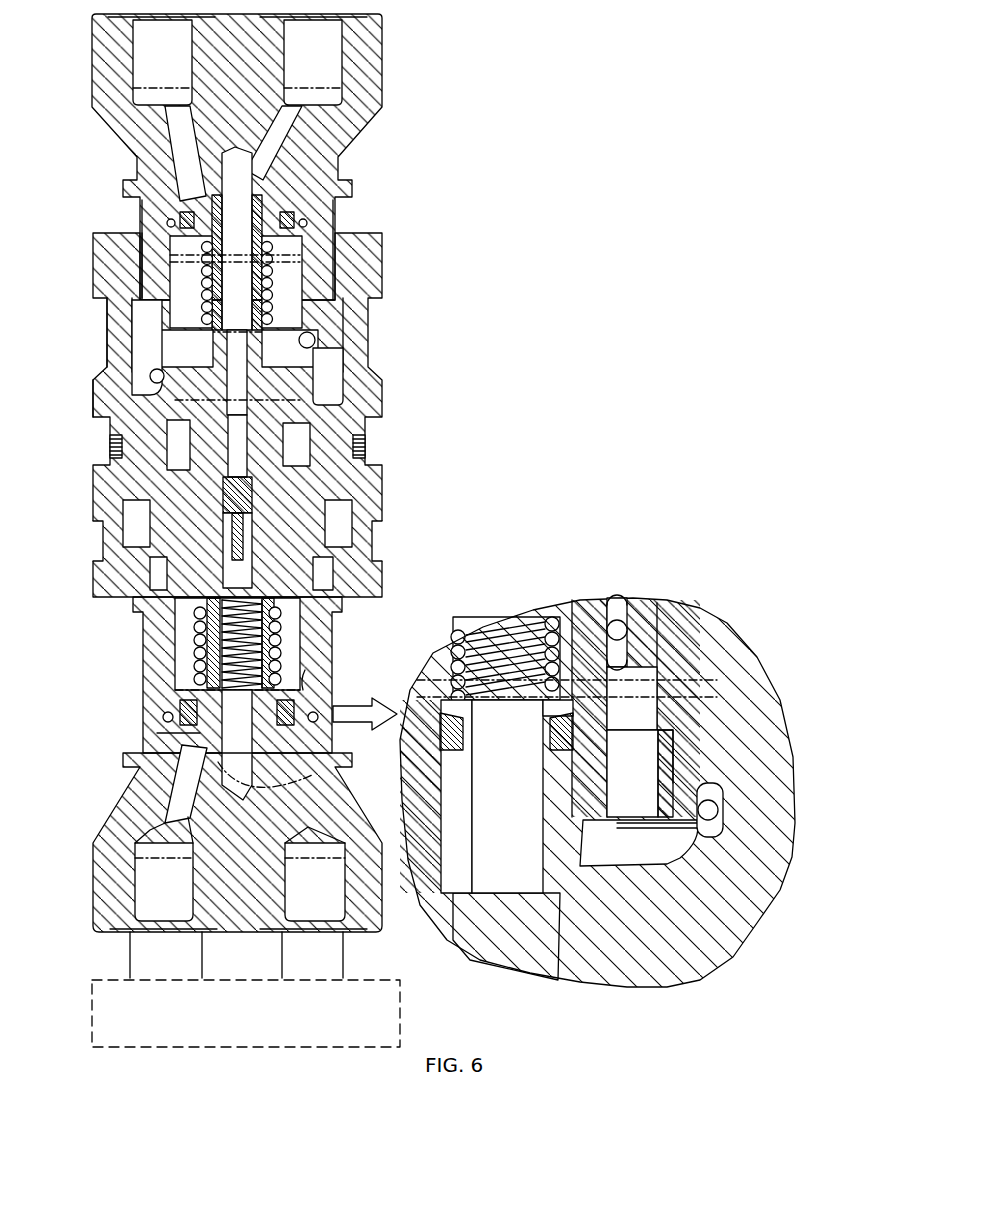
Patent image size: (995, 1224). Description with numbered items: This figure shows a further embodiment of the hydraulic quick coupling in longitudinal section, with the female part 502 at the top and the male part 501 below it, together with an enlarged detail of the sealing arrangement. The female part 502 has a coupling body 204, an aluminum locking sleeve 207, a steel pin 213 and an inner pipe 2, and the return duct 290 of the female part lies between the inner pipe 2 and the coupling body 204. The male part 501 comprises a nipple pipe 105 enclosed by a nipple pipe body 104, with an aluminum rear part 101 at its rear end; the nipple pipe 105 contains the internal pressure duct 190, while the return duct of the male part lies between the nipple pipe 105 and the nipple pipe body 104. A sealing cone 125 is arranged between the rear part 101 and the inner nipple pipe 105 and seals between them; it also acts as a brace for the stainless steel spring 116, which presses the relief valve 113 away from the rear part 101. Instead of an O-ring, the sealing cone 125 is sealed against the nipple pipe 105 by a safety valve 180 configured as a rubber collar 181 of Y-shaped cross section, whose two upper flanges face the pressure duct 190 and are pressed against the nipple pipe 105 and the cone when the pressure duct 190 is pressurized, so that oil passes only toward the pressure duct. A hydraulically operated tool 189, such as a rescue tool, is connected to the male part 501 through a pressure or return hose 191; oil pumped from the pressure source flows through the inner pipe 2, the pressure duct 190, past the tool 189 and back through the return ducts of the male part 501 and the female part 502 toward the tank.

The inner pipe 2 is at (135, 403).
The aluminum rear part 101 is at (120, 823).
The nipple pipe body 104 is at (340, 577).
The nipple pipe 105 is at (583, 614).
The relief valve 113 is at (250, 523).
The stainless steel spring 116 is at (190, 623).
The sealing cone 125 is at (308, 750).
The safety valve 180 is at (537, 747).
The collar 181 is at (313, 693).
The hydraulically operated tool 189 is at (92, 990).
The pressure duct 190 is at (157, 733).
The pressure or return hose 191 is at (203, 950).
The coupling body 204 is at (120, 347).
The aluminum locking sleeve 207 is at (100, 258).
The steel pin 213 is at (97, 525).
The return duct 290 is at (107, 305).
The male part 501 is at (263, 644).
The female part 502 is at (432, 113).